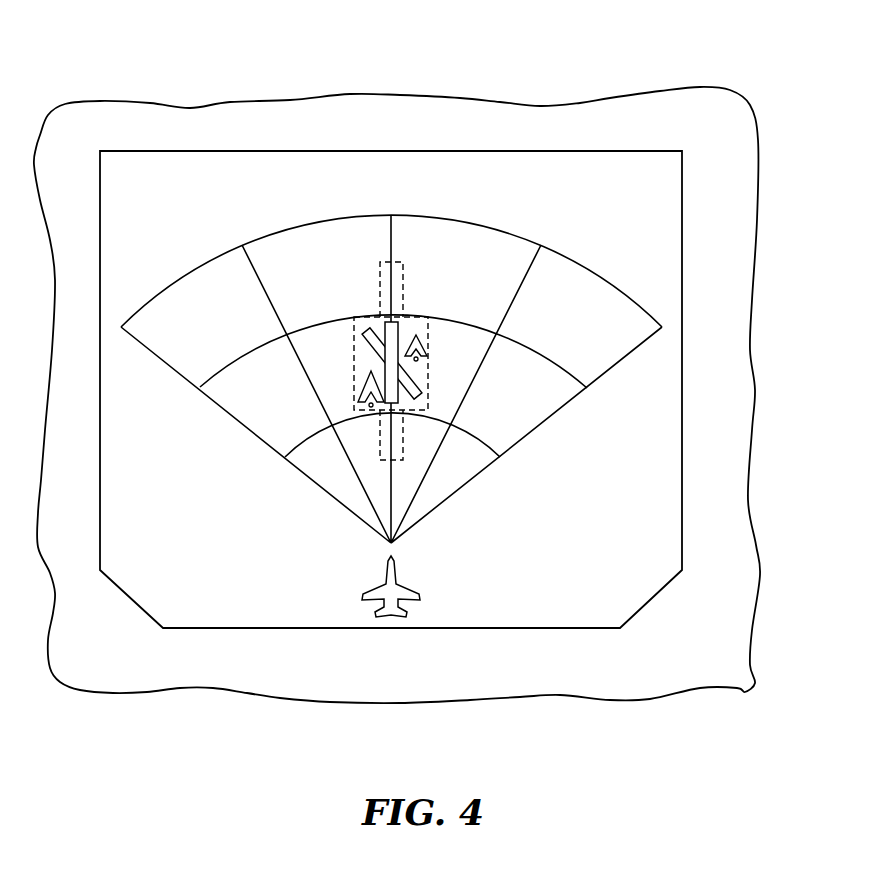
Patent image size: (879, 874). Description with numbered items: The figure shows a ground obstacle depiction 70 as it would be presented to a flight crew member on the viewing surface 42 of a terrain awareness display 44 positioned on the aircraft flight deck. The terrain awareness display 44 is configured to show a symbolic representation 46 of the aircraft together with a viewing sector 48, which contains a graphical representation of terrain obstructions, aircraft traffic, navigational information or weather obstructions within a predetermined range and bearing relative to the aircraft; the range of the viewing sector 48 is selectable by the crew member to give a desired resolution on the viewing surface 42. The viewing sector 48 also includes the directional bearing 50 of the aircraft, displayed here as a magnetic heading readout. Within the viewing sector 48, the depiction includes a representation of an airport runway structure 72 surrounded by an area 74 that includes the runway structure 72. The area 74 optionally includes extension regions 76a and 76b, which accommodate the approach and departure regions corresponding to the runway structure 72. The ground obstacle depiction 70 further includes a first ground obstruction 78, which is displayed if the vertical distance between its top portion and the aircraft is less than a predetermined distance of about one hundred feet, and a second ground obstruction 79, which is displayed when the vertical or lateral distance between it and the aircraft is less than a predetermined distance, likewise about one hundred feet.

The ground obstacle depiction 70 is at (420, 361).
The terrain awareness display 44 is at (762, 150).
The viewing surface 42 is at (626, 212).
The directional bearing 50 is at (322, 192).
The viewing sector 48 is at (582, 421).
The symbolic representation of the aircraft 46 is at (400, 580).
The airport runway structure 72 is at (364, 337).
The area 74 is at (430, 382).
The first ground obstruction 78 is at (428, 346).
The second ground obstruction 79 is at (359, 386).
The extension region 76a is at (404, 446).
The extension region 76b is at (404, 290).